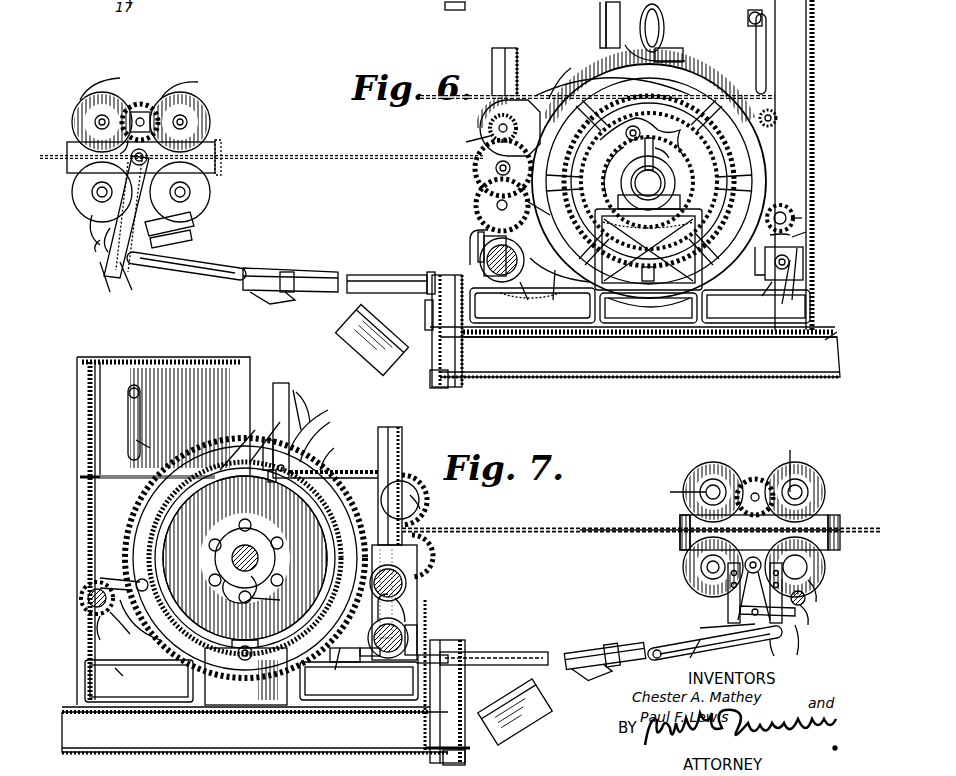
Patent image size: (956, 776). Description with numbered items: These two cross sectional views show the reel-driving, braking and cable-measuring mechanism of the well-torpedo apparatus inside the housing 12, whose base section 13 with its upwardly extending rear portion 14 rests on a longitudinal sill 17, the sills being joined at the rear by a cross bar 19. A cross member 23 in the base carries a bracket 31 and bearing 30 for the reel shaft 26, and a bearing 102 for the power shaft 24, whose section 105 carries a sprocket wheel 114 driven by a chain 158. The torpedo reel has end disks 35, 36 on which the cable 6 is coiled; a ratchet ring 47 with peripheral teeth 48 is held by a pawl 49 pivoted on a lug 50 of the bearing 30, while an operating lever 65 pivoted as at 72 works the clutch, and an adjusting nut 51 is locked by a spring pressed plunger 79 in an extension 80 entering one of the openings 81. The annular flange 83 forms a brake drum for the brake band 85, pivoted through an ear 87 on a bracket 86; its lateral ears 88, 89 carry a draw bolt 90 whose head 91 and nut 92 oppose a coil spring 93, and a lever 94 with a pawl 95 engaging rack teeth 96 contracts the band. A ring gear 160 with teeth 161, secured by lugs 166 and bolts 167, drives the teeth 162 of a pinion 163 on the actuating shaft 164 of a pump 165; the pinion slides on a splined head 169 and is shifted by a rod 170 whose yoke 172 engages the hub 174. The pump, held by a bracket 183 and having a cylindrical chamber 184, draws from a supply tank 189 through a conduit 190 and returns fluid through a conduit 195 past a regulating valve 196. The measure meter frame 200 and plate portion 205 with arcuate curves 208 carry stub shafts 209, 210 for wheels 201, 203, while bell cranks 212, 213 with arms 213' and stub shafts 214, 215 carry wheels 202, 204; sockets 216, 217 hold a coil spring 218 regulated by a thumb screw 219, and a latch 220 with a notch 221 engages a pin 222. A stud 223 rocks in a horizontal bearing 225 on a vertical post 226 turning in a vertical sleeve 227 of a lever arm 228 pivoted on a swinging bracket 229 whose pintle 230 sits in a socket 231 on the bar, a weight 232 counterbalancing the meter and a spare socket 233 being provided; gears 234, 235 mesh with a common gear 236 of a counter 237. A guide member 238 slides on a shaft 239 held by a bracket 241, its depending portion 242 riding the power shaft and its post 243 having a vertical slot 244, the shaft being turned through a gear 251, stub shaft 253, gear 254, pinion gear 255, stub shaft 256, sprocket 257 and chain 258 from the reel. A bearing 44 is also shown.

In FIG. 6, the cable 6 is at (287, 148).
In FIG. 7, the cable 6 is at (615, 528).
In FIG. 7, the housing 12 is at (80, 363).
In FIG. 6, the base section 13 is at (605, 342).
In FIG. 7, the base section 13 is at (150, 712).
In FIG. 6, the rear portion 14 is at (822, 342).
In FIG. 7, the rear portion 14 is at (72, 716).
In FIG. 6, the longitudinal sill 17 is at (553, 370).
In FIG. 7, the longitudinal sill 17 is at (330, 752).
In FIG. 6, the cross bar 19 is at (468, 350).
In FIG. 7, the cross bar 19 is at (428, 725).
In FIG. 6, the cross member 23 is at (694, 304).
In FIG. 7, the cross member 23 is at (190, 696).
In FIG. 6, the power shaft 24 is at (486, 262).
In FIG. 7, the power shaft 24 is at (408, 620).
In FIG. 6, the reel shaft 26 is at (662, 184).
In FIG. 7, the reel shaft 26 is at (260, 555).
In FIG. 6, the bearing 30 is at (625, 192).
In FIG. 6, the bracket 31 is at (700, 212).
In FIG. 7, the end disk 35 is at (332, 444).
In FIG. 6, the end disk 36 is at (692, 72).
In FIG. 6, the hub 44 is at (622, 182).
In FIG. 6, the ratchet ring 47 is at (684, 160).
In FIG. 6, the peripheral teeth 48 is at (664, 142).
In FIG. 6, the pawl 49 is at (612, 170).
In FIG. 6, the lug 50 is at (640, 118).
In FIG. 7, the adjusting nut 51 is at (273, 563).
In FIG. 6, the operating lever 65 is at (660, 14).
In FIG. 6, the lever pivot 72 is at (665, 50).
In FIG. 7, the spring pressed plunger 79 is at (276, 599).
In FIG. 7, the extension 80 is at (235, 612).
In FIG. 7, the openings 81 is at (219, 596).
In FIG. 7, the annular flange 83 is at (303, 475).
In FIG. 7, the brake band 85 is at (172, 505).
In FIG. 7, the bracket 86 is at (232, 705).
In FIG. 7, the ear 87 is at (240, 660).
In FIG. 7, the lateral ear 88 is at (225, 468).
In FIG. 7, the lateral ear 89 is at (266, 445).
In FIG. 7, the draw bolt 90 is at (242, 428).
In FIG. 7, the head 91 is at (324, 431).
In FIG. 7, the nut 92 is at (195, 473).
In FIG. 7, the coil spring 93 is at (222, 441).
In FIG. 7, the lever 94 is at (273, 412).
In FIG. 7, the pawl 95 is at (305, 400).
In FIG. 7, the rack teeth 96 is at (316, 420).
In FIG. 6, the bearing 102 is at (486, 245).
In FIG. 6, the shaft section 105 is at (476, 236).
In FIG. 7, the shaft section 105 is at (414, 604).
In FIG. 6, the sprocket wheel 114 is at (534, 296).
In FIG. 6, the chain 158 is at (552, 300).
In FIG. 7, the ring gear 160 is at (340, 440).
In FIG. 7, the teeth 161 is at (334, 461).
In FIG. 6, the teeth 162 is at (806, 230).
In FIG. 7, the teeth 162 is at (140, 626).
In FIG. 6, the pinion 163 is at (800, 220).
In FIG. 7, the pinion 163 is at (118, 626).
In FIG. 6, the actuating shaft 164 is at (775, 212).
In FIG. 7, the actuating shaft 164 is at (88, 598).
In FIG. 6, the pump 165 is at (803, 258).
In FIG. 7, the lugs 166 is at (340, 670).
In FIG. 7, the bolts 167 is at (305, 672).
In FIG. 7, the splined head 169 is at (100, 616).
In FIG. 7, the rod 170 is at (100, 568).
In FIG. 7, the yoke 172 is at (136, 580).
In FIG. 7, the hub 174 is at (100, 588).
In FIG. 6, the bracket 183 is at (751, 292).
In FIG. 6, the cylindrical chamber 184 is at (755, 12).
In FIG. 7, the supply tank 189 is at (134, 415).
In FIG. 6, the conduit 190 is at (788, 316).
In FIG. 7, the conduit 190 is at (126, 680).
In FIG. 6, the conduit 195 is at (756, 34).
In FIG. 7, the conduit 195 is at (156, 446).
In FIG. 6, the regulating valve 196 is at (777, 112).
In FIG. 6, the frame 200 is at (215, 142).
In FIG. 7, the frame 200 is at (690, 520).
In FIG. 6, the wheel 201 is at (202, 98).
In FIG. 7, the wheel 201 is at (722, 454).
In FIG. 6, the wheel 202 is at (208, 202).
In FIG. 7, the wheel 202 is at (688, 560).
In FIG. 6, the wheel 203 is at (88, 90).
In FIG. 7, the wheel 203 is at (800, 464).
In FIG. 6, the wheel 204 is at (93, 238).
In FIG. 7, the wheel 204 is at (812, 600).
In FIG. 6, the plate portion 205 is at (216, 176).
In FIG. 7, the arcuate curves 208 is at (637, 518).
In FIG. 7, the stub shaft 209 is at (674, 489).
In FIG. 7, the stub shaft 210 is at (775, 460).
In FIG. 7, the bell crank 212 is at (700, 583).
In FIG. 7, the bell crank 213 is at (813, 611).
In FIG. 7, the arm 213' is at (682, 564).
In FIG. 7, the stub shaft 214 is at (726, 575).
In FIG. 7, the stub shaft 215 is at (700, 592).
In FIG. 6, the socket 216 is at (175, 238).
In FIG. 7, the socket 216 is at (738, 612).
In FIG. 6, the socket 217 is at (100, 260).
In FIG. 7, the socket 217 is at (816, 650).
In FIG. 7, the coil spring 218 is at (752, 640).
In FIG. 6, the thumb screw 219 is at (95, 255).
In FIG. 7, the thumb screw 219 is at (798, 640).
In FIG. 7, the latch 220 is at (786, 651).
In FIG. 7, the notch 221 is at (698, 654).
In FIG. 7, the pin 222 is at (711, 625).
In FIG. 6, the stud 223 is at (148, 155).
In FIG. 6, the horizontal bearing 225 is at (150, 170).
In FIG. 6, the vertical post 226 is at (122, 272).
In FIG. 6, the vertical sleeve 227 is at (135, 268).
In FIG. 6, the lever arm 228 is at (218, 262).
In FIG. 7, the lever arm 228 is at (636, 632).
In FIG. 6, the swinging bracket 229 is at (320, 262).
In FIG. 7, the swinging bracket 229 is at (514, 650).
In FIG. 6, the pintle 230 is at (432, 300).
In FIG. 6, the socket 231 is at (448, 385).
In FIG. 7, the socket 231 is at (467, 740).
In FIG. 6, the weight 232 is at (345, 337).
In FIG. 7, the weight 232 is at (545, 712).
In FIG. 6, the socket 233 is at (465, 7).
In FIG. 6, the gear 234 is at (195, 86).
In FIG. 6, the gear 235 is at (100, 100).
In FIG. 6, the common gear 236 is at (145, 104).
In FIG. 7, the common gear 236 is at (752, 478).
In FIG. 6, the counter 237 is at (122, 152).
In FIG. 7, the guide member 238 is at (415, 560).
In FIG. 6, the shaft 239 is at (496, 204).
In FIG. 7, the shaft 239 is at (416, 572).
In FIG. 6, the bracket 241 is at (460, 141).
In FIG. 7, the depending portion 242 is at (417, 632).
In FIG. 6, the post 243 is at (517, 60).
In FIG. 7, the post 243 is at (418, 492).
In FIG. 6, the vertical slot 244 is at (700, 170).
In FIG. 6, the gear 251 is at (482, 210).
In FIG. 7, the gear 251 is at (412, 590).
In FIG. 6, the stub shaft 253 is at (496, 168).
In FIG. 6, the gear 254 is at (492, 172).
In FIG. 7, the gear 254 is at (418, 545).
In FIG. 6, the pinion gear 255 is at (488, 110).
In FIG. 6, the stub shaft 256 is at (490, 126).
In FIG. 6, the sprocket 257 is at (507, 96).
In FIG. 7, the sprocket 257 is at (415, 522).
In FIG. 6, the chain 258 is at (575, 60).
In FIG. 7, the chain 258 is at (437, 500).